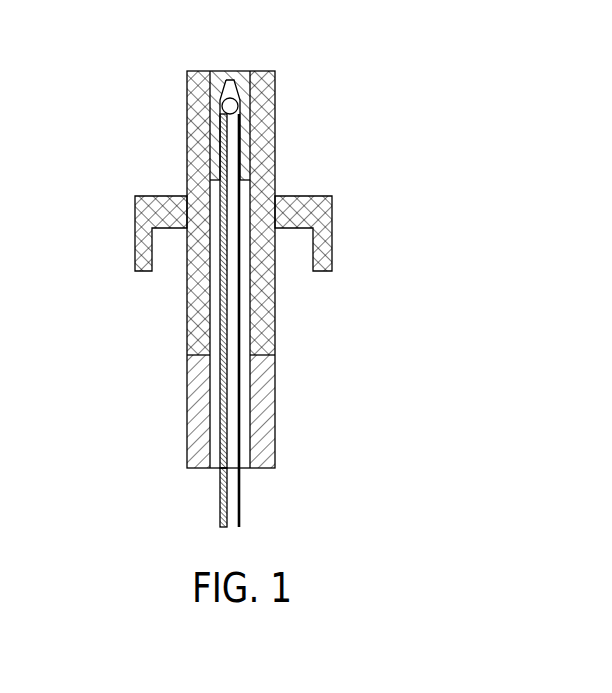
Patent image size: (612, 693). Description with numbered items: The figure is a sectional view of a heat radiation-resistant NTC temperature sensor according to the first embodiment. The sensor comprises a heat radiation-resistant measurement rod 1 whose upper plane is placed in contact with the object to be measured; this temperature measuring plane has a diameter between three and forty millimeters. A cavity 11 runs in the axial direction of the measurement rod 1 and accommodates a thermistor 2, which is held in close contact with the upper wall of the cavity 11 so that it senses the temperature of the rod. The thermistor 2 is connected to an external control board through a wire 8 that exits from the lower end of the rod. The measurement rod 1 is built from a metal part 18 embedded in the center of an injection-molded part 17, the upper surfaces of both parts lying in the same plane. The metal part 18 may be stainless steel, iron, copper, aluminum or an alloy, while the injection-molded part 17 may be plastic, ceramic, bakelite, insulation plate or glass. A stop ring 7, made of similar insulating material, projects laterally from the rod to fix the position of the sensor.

The heat radiation-resistant measurement rod 1 is at (278, 88).
The thermistor 2 is at (205, 85).
The stop ring 7 is at (335, 200).
The wire 8 is at (242, 497).
The cavity 11 is at (275, 157).
The injection-molded part 17 is at (265, 290).
The metal part 18 is at (225, 78).